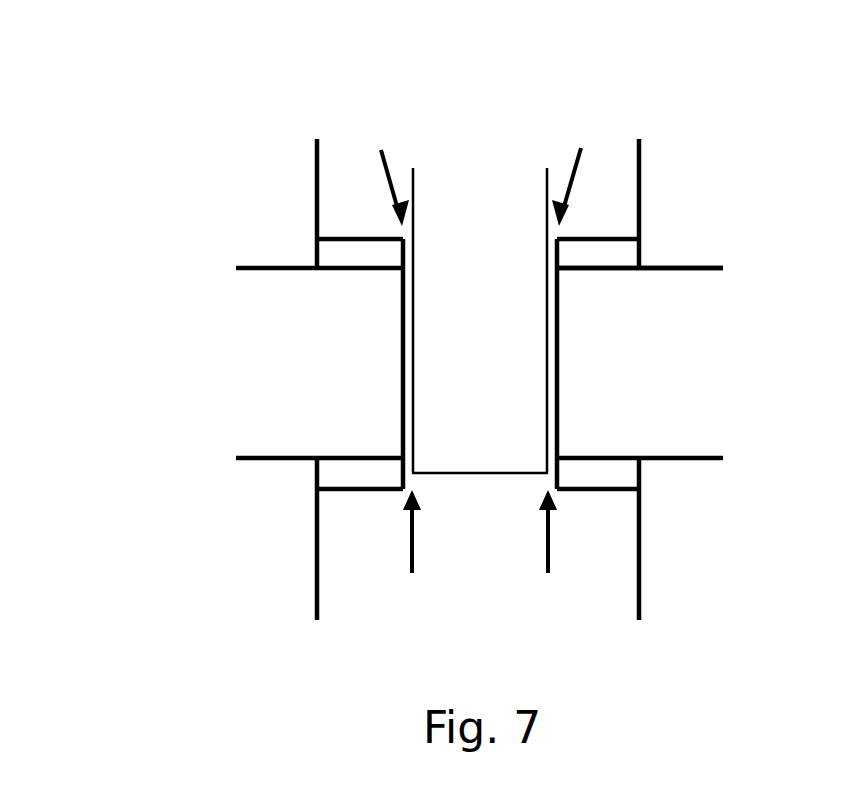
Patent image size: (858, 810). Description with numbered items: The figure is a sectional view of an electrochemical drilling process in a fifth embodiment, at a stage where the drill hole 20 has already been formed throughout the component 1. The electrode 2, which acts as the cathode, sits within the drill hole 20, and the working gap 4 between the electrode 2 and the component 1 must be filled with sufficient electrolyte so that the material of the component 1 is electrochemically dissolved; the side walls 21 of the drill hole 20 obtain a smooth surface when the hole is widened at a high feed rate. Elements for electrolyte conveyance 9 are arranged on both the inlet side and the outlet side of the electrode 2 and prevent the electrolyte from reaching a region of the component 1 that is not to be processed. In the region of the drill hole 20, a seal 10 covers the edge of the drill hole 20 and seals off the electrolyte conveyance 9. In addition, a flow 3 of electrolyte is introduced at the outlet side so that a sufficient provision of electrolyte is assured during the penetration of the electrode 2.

The component 1 is at (645, 305).
The electrode 2 is at (455, 328).
The flow of electrolyte 3 is at (578, 160).
The working gap 4 is at (553, 355).
The elements for electrolyte conveyance 9 is at (317, 163).
The seal 10 is at (356, 256).
The drill hole 20 is at (473, 503).
The side walls 21 is at (402, 359).